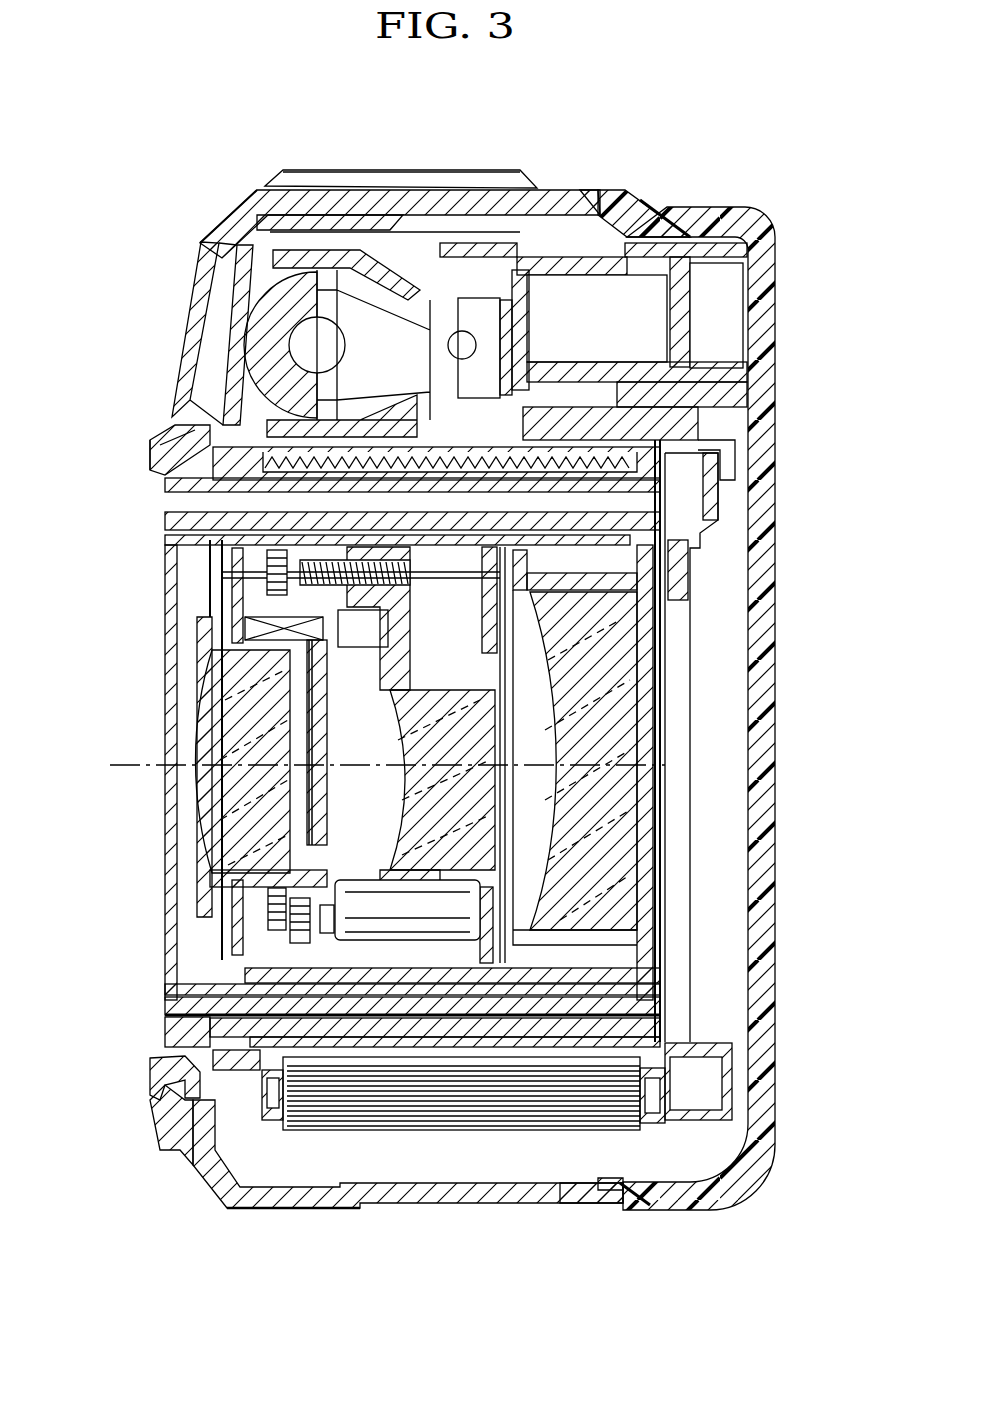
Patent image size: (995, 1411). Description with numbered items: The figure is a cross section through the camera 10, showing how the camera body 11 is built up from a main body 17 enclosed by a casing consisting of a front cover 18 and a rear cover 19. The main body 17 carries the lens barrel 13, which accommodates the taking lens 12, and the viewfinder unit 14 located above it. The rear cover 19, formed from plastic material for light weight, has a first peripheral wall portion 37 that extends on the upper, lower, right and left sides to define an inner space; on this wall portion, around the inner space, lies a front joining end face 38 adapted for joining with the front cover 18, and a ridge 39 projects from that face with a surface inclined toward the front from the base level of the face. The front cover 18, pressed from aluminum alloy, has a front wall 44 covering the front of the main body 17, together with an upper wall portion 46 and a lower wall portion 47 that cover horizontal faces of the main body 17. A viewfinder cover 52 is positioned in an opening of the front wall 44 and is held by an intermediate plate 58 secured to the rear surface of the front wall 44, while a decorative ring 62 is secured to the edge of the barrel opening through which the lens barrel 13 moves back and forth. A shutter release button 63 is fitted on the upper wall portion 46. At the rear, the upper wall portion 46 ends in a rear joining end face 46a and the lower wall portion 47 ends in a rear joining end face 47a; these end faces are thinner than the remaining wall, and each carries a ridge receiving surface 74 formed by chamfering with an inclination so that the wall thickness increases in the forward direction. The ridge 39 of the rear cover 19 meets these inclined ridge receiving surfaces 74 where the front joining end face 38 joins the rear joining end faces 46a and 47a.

The camera 10 is at (738, 165).
The camera body 11 is at (275, 1210).
The taking lens 12 is at (200, 798).
The lens barrel 13 is at (180, 600).
The viewfinder unit 14 is at (270, 263).
The main body 17 is at (703, 421).
The front cover 18 is at (217, 207).
The rear cover 19 is at (777, 231).
The first peripheral wall portion 37 is at (630, 227).
The front joining end face 38 is at (623, 193).
The ridge 39 is at (600, 212).
The front wall 44 is at (180, 1130).
The upper wall portion 46 is at (290, 200).
The rear joining end face 46a is at (607, 193).
The lower wall portion 47 is at (417, 1192).
The rear joining end face 47a is at (615, 1205).
The viewfinder cover 52 is at (190, 332).
The intermediate plate 58 is at (165, 430).
The decorative ring 62 is at (165, 1060).
The shutter release button 63 is at (355, 178).
The ridge receiving surface 74 is at (600, 207).